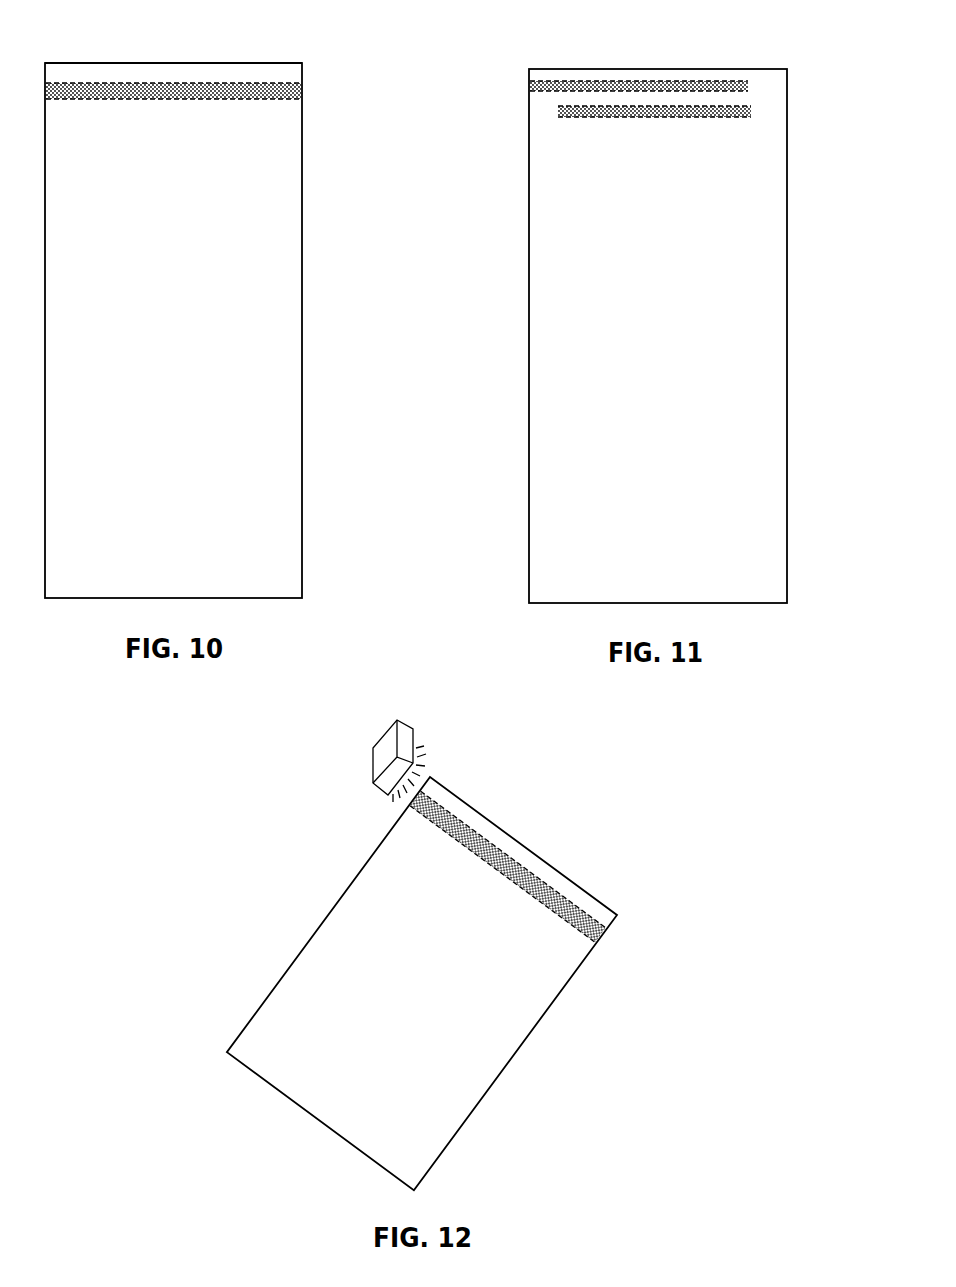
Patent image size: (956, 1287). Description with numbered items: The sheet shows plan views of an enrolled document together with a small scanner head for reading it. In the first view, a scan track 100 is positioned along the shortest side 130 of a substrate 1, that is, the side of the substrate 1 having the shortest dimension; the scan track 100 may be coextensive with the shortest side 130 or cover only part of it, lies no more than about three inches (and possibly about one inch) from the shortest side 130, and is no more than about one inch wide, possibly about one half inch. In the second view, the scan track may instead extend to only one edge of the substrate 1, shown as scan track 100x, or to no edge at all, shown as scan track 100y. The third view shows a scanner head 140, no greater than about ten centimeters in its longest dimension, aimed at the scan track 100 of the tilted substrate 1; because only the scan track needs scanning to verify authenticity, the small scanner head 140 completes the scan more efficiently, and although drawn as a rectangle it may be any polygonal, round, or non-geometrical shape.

In FIG. 10, the substrate 1 is at (302, 148).
In FIG. 11, the substrate 1 is at (787, 240).
In FIG. 12, the substrate 1 is at (507, 1072).
In FIG. 10, the scan track 100 is at (120, 100).
In FIG. 12, the scan track 100 is at (527, 888).
In FIG. 10, the shortest side 130 is at (265, 62).
In FIG. 11, the scan track 100x is at (717, 82).
In FIG. 11, the scan track 100y is at (617, 117).
In FIG. 12, the scanner head 140 is at (405, 718).